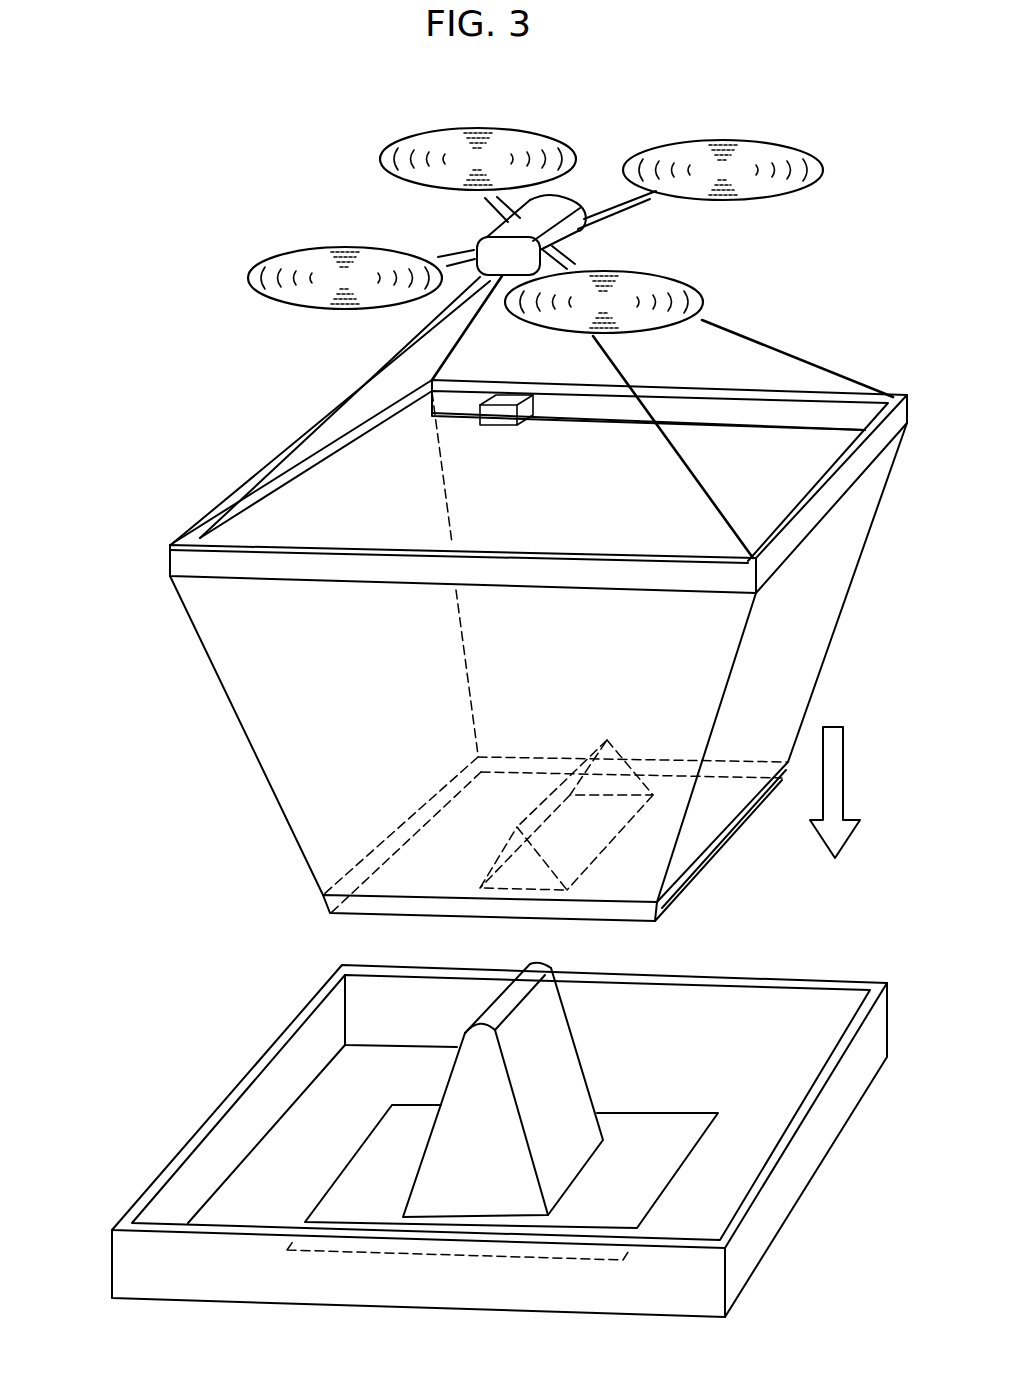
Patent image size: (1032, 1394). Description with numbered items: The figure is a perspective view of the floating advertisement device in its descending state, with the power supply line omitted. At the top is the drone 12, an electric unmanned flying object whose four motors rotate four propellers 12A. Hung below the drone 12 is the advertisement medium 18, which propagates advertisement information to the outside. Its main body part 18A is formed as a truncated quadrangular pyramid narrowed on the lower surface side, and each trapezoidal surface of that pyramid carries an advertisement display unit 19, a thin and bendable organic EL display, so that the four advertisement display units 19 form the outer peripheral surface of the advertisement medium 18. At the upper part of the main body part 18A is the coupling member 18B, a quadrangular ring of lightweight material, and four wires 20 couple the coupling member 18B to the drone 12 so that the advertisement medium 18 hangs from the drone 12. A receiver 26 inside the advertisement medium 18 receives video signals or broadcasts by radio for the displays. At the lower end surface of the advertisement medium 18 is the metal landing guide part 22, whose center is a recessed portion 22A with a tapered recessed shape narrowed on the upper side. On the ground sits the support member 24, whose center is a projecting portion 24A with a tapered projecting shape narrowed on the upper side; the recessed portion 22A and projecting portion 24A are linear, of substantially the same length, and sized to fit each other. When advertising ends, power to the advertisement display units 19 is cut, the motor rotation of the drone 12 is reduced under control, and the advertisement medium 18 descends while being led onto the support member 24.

The drone 12 is at (563, 212).
The propeller 12A is at (438, 130).
The advertisement medium 18 is at (488, 673).
The main body part 18A is at (531, 647).
The coupling member 18B is at (165, 563).
The advertisement display unit 19 is at (275, 717).
The wire 20 is at (333, 410).
The landing guide part 22 is at (707, 853).
The recessed portion 22A is at (540, 826).
The support member 24 is at (112, 1262).
The projecting portion 24A is at (588, 1080).
The receiver 26 is at (497, 418).